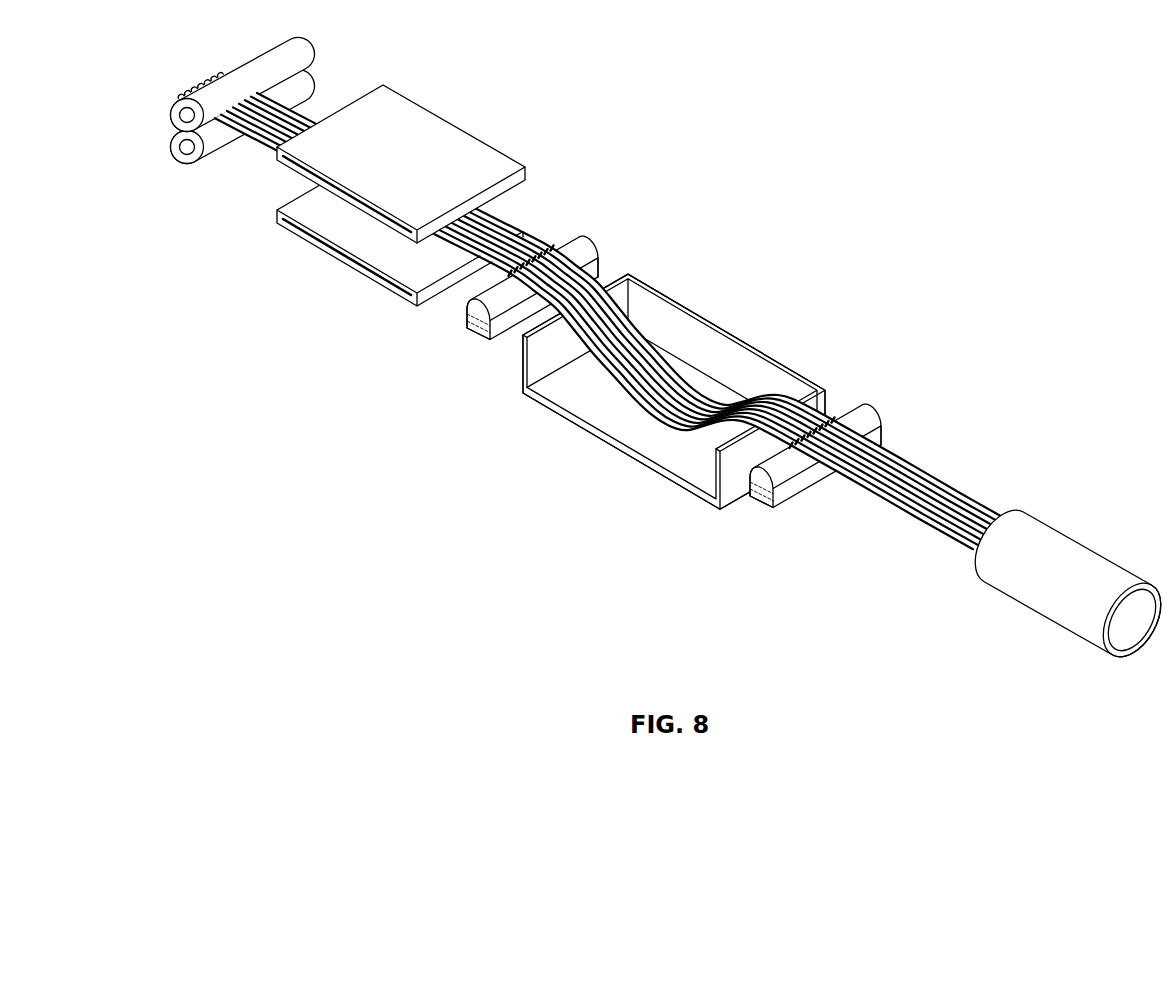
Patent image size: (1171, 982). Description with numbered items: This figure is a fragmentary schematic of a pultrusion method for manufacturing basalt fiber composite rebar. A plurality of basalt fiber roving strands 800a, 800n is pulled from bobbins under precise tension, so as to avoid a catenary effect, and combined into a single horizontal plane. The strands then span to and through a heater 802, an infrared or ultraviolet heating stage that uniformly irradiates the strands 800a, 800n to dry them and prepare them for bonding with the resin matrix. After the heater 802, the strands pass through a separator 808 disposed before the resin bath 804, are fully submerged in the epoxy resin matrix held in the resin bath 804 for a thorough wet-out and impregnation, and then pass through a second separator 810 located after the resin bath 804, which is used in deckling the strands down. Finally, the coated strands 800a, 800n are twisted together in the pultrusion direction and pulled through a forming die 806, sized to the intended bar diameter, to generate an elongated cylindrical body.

The basalt roving strand 800a is at (312, 118).
The basalt roving strand 800n is at (252, 138).
The heater 802 is at (320, 265).
The resin bath 804 is at (600, 454).
The forming die 806 is at (1007, 606).
The separator 808 is at (467, 319).
The separator 810 is at (763, 503).